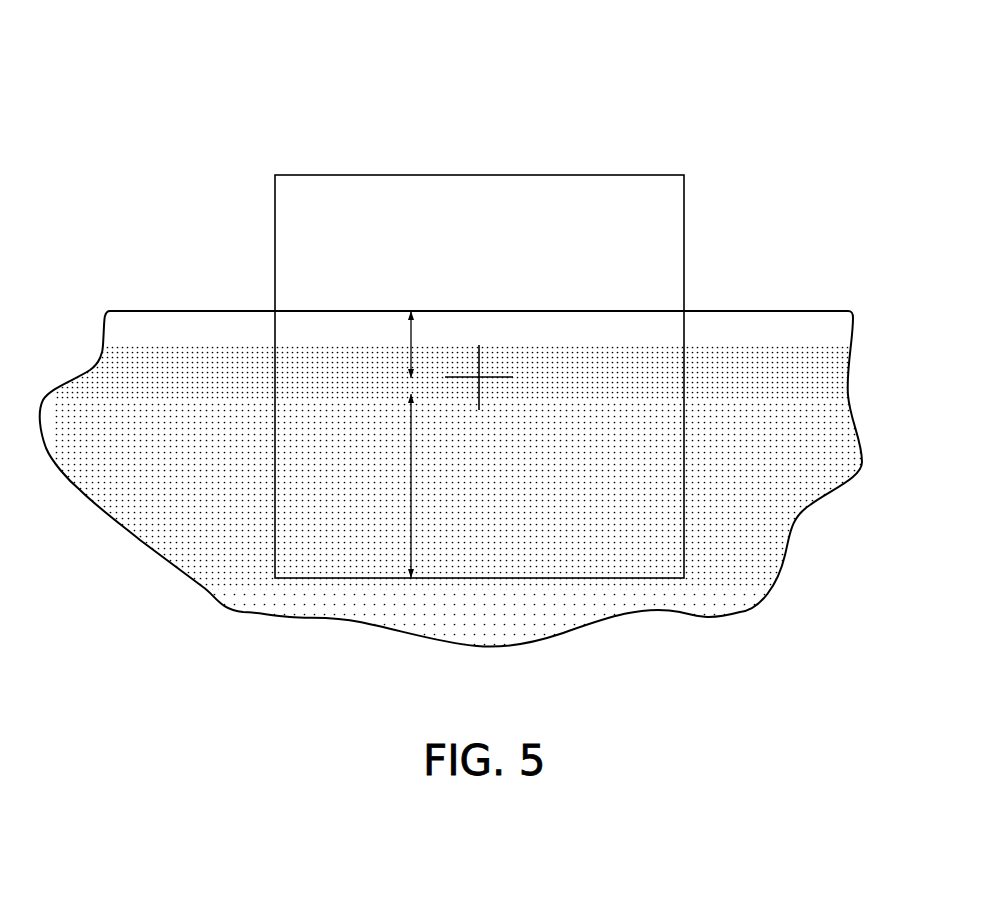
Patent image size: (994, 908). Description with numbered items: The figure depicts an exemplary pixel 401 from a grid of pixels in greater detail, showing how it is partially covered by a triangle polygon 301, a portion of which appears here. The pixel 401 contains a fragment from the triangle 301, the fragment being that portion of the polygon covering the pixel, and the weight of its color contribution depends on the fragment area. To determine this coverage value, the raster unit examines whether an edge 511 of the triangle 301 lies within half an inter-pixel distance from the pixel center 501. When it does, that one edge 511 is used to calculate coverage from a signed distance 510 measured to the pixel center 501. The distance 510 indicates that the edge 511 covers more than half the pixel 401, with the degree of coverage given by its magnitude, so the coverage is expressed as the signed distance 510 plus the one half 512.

The triangle polygon 301 is at (780, 375).
The pixel 401 is at (533, 175).
The pixel center 501 is at (479, 310).
The signed distance 510 is at (385, 343).
The edge 511 is at (716, 298).
The one half 512 is at (404, 485).